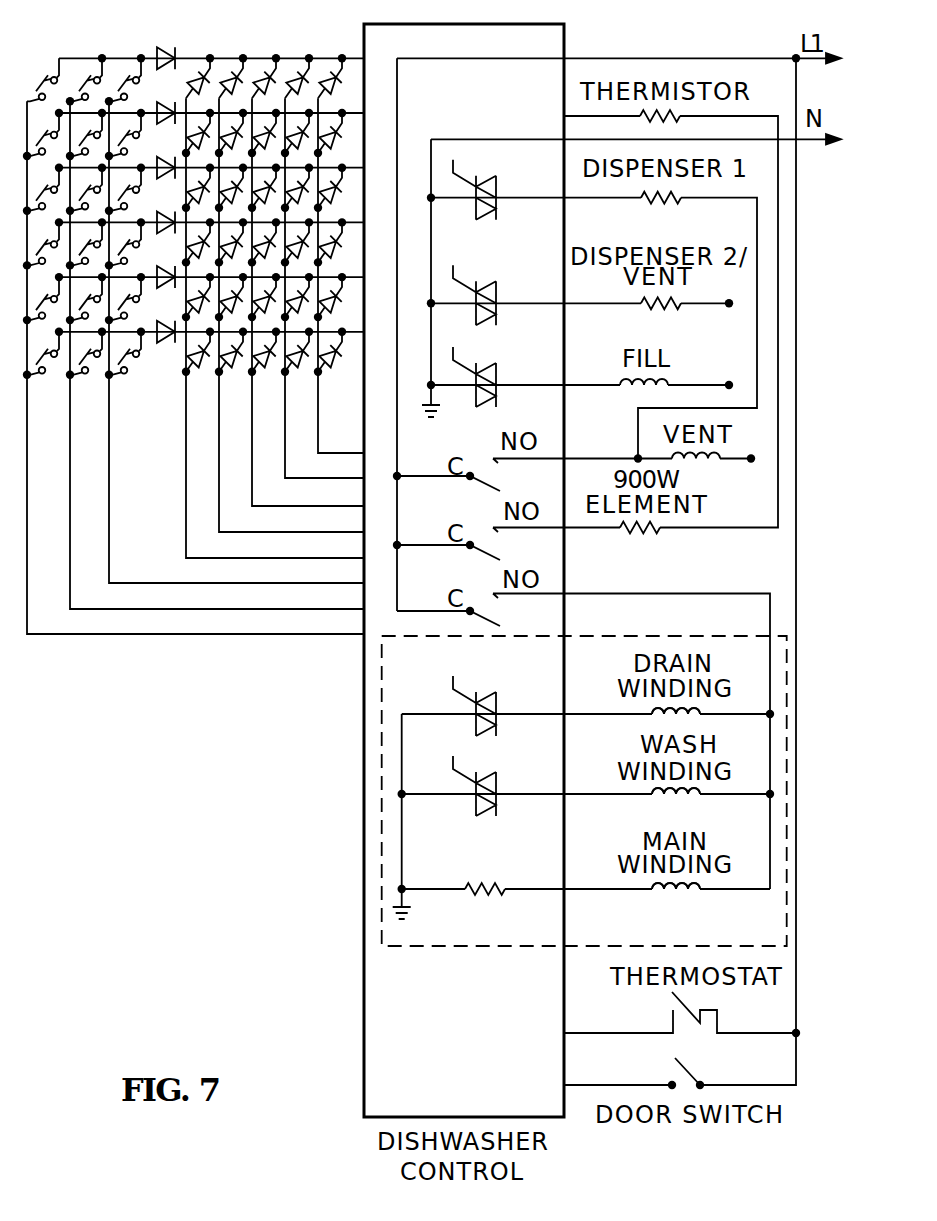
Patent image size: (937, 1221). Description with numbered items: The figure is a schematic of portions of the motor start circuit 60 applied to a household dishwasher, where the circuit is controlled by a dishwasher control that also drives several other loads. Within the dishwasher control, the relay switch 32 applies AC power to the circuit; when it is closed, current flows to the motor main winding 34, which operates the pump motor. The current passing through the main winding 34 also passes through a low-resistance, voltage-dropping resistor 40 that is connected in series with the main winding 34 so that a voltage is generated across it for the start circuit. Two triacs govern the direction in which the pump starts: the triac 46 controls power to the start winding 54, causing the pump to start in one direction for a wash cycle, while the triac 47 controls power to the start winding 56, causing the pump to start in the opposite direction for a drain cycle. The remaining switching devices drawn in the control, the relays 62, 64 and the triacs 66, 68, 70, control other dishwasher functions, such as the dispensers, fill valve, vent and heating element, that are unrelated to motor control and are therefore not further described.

The triac 70 is at (487, 175).
The triac 68 is at (485, 282).
The triac 66 is at (485, 364).
The relay 64 is at (485, 481).
The relay 62 is at (485, 549).
The relay switch 32 is at (485, 615).
The motor start circuit 60 is at (364, 788).
The triac 47 is at (470, 722).
The triac 46 is at (470, 806).
The resistor 40 is at (478, 897).
The start winding 56 is at (668, 716).
The start winding 54 is at (668, 795).
The main winding 34 is at (672, 890).